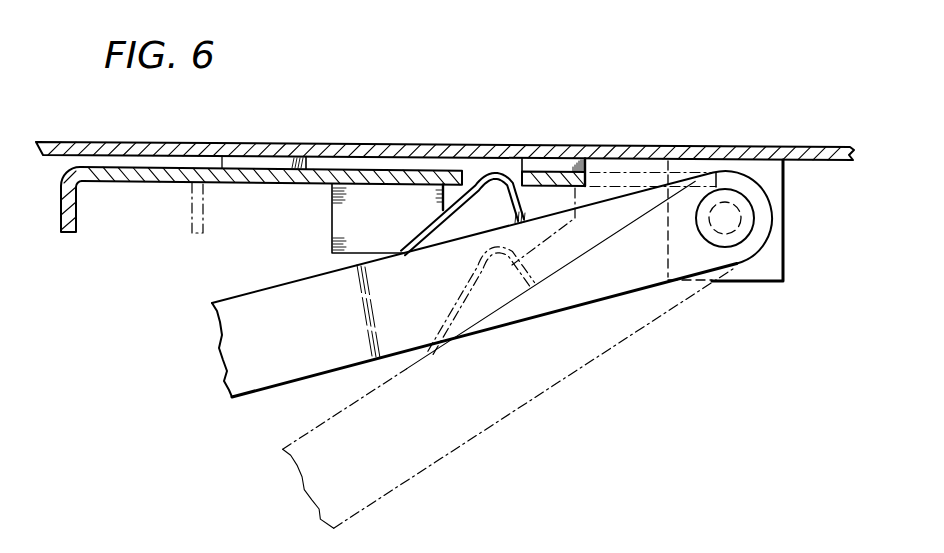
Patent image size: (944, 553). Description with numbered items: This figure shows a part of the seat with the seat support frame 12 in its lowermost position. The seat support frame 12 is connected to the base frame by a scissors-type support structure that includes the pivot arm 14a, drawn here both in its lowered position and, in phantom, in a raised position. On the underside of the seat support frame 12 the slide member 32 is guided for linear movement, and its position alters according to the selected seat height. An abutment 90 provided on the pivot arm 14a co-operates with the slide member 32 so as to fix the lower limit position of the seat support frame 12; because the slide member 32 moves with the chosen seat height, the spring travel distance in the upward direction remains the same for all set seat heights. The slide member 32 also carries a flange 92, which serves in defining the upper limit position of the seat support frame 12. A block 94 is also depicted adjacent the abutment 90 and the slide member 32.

The seat support frame 12 is at (703, 157).
The slide member 32 is at (263, 184).
The flange 92 is at (69, 226).
The stop block 94 is at (332, 223).
The abutment 90 is at (434, 222).
The pivot arm 14a is at (237, 355).